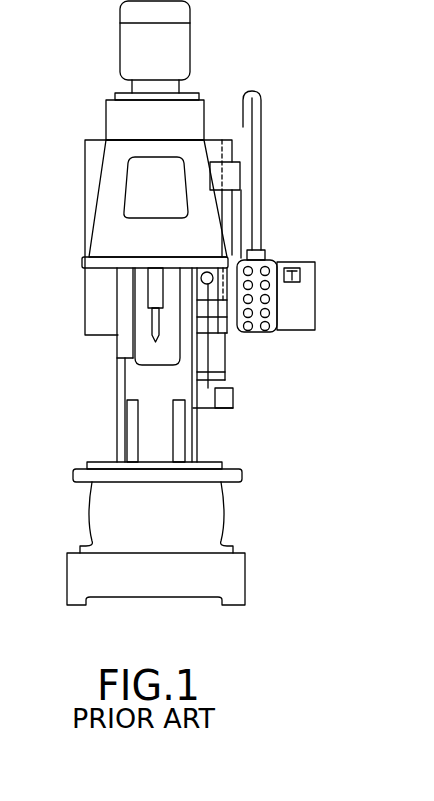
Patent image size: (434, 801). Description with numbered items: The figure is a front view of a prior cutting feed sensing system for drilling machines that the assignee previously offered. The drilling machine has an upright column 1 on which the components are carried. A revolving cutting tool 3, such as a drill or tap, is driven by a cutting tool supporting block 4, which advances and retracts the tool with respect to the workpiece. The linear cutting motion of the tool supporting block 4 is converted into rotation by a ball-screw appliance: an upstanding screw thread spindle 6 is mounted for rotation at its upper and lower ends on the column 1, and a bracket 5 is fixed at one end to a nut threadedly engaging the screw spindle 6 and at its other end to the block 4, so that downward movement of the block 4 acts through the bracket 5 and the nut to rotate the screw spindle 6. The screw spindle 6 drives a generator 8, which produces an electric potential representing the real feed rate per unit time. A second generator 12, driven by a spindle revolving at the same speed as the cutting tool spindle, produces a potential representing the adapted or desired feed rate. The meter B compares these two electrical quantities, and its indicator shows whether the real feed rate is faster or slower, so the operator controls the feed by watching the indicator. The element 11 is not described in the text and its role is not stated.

The column 1 is at (190, 380).
The revolving cutting tool 3 is at (152, 322).
The cutting tool supporting block 4 is at (100, 233).
The bracket 5 is at (233, 177).
The screw thread spindle 6 is at (230, 196).
The generator 8 is at (232, 402).
The feed mechanism 11 is at (207, 362).
The generator 12 is at (205, 402).
The meter B is at (303, 292).